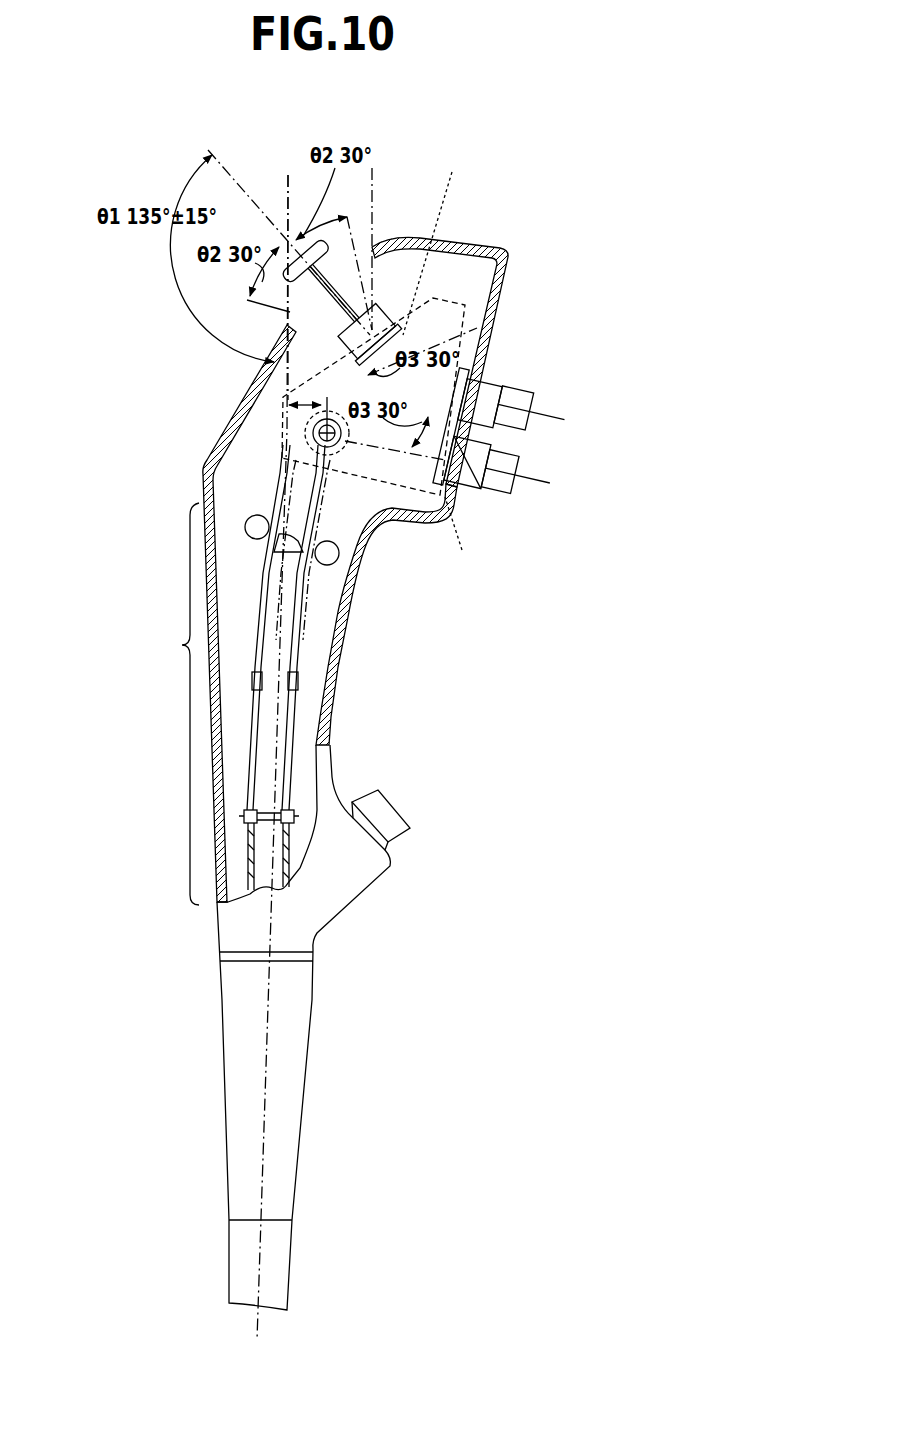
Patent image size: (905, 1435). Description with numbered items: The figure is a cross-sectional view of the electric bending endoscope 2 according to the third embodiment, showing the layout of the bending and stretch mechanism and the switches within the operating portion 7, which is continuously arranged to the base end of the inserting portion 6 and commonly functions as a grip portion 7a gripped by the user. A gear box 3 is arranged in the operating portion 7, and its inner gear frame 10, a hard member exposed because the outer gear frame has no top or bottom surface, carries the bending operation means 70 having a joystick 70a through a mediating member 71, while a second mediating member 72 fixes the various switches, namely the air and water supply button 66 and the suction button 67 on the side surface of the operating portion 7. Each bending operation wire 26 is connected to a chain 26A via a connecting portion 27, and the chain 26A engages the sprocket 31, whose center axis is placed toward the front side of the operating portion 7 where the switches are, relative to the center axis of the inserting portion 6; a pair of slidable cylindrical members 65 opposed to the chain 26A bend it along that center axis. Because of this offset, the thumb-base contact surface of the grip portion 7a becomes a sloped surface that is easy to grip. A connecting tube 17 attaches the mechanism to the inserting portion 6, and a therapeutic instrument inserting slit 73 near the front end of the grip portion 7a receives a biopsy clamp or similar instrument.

The electric bending endoscope 2 is at (108, 376).
The gear box 3 is at (472, 300).
The inserting portion 6 is at (282, 1257).
The operating portion 7 is at (507, 230).
The grip portion 7a is at (172, 704).
The inner gear frame 10 is at (313, 397).
The connecting tube 17 is at (282, 1115).
The bending operation wire 26 is at (295, 727).
The chain 26A is at (305, 614).
The connecting portion 27 is at (299, 677).
The sprocket 31 is at (352, 444).
The cylindrical members 65 is at (256, 517).
The air and water supply button 66 is at (520, 396).
The suction button 67 is at (502, 485).
The bending operation means 70 is at (385, 296).
The joystick 70a is at (335, 312).
The mediating member 71 is at (398, 338).
The mediating member 72 is at (472, 393).
The therapeutic instrument inserting slit 73 is at (397, 807).